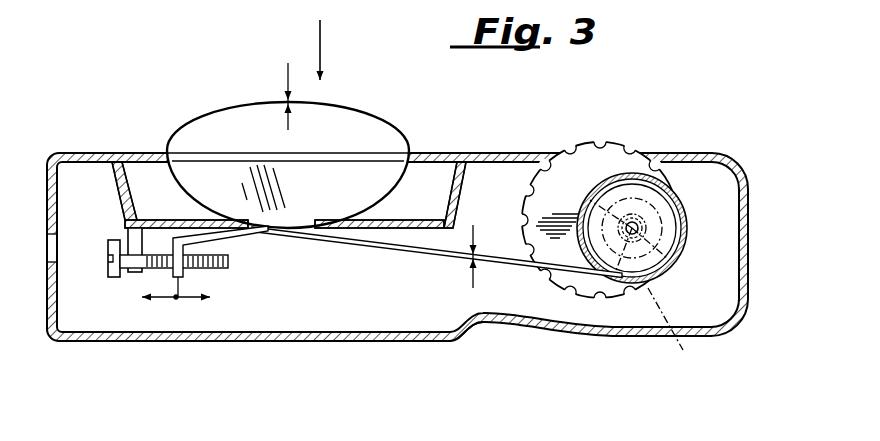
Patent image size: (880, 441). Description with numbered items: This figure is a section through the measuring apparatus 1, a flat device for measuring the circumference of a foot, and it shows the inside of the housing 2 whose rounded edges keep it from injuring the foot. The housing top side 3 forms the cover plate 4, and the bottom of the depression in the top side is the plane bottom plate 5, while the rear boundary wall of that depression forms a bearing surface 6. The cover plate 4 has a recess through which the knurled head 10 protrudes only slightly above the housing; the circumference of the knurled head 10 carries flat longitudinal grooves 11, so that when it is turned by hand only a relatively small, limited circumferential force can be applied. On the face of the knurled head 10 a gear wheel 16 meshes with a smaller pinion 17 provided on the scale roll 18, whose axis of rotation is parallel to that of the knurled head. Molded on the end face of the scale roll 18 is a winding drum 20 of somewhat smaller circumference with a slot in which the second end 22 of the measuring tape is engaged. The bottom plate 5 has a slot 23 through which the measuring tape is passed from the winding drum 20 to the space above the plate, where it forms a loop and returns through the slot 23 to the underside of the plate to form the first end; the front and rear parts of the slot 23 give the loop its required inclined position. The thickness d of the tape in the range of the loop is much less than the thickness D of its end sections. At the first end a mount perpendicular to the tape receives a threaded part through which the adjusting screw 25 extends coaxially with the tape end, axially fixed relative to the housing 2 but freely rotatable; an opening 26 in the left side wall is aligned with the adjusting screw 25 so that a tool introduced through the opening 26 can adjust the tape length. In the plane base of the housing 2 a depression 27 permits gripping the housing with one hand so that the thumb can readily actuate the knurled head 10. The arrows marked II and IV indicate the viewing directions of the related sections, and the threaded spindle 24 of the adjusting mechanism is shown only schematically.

The measuring apparatus 1 is at (397, 224).
The housing 2 is at (397, 245).
The housing top side 3 is at (227, 150).
The cover plate 4 is at (690, 158).
The bottom plate 5 is at (172, 220).
The bearing surface 6 is at (300, 187).
The knurled head 10 is at (586, 203).
The longitudinal grooves 11 is at (601, 142).
The gear wheel 16 is at (578, 214).
The pinion 17 is at (672, 267).
The scale roll 18 is at (663, 210).
The winding drum 20 is at (689, 243).
The second end of measuring tape 22 is at (617, 282).
The slot 23 is at (270, 232).
The threaded spindle 24 is at (222, 270).
The adjusting screw 25 is at (112, 278).
The opening 26 is at (60, 262).
The depression 27 is at (478, 332).
The thickness of measuring tape d is at (287, 98).
The thickness of end sections of measuring tape D is at (467, 258).
The section line II is at (326, 49).
The section line IV is at (672, 335).